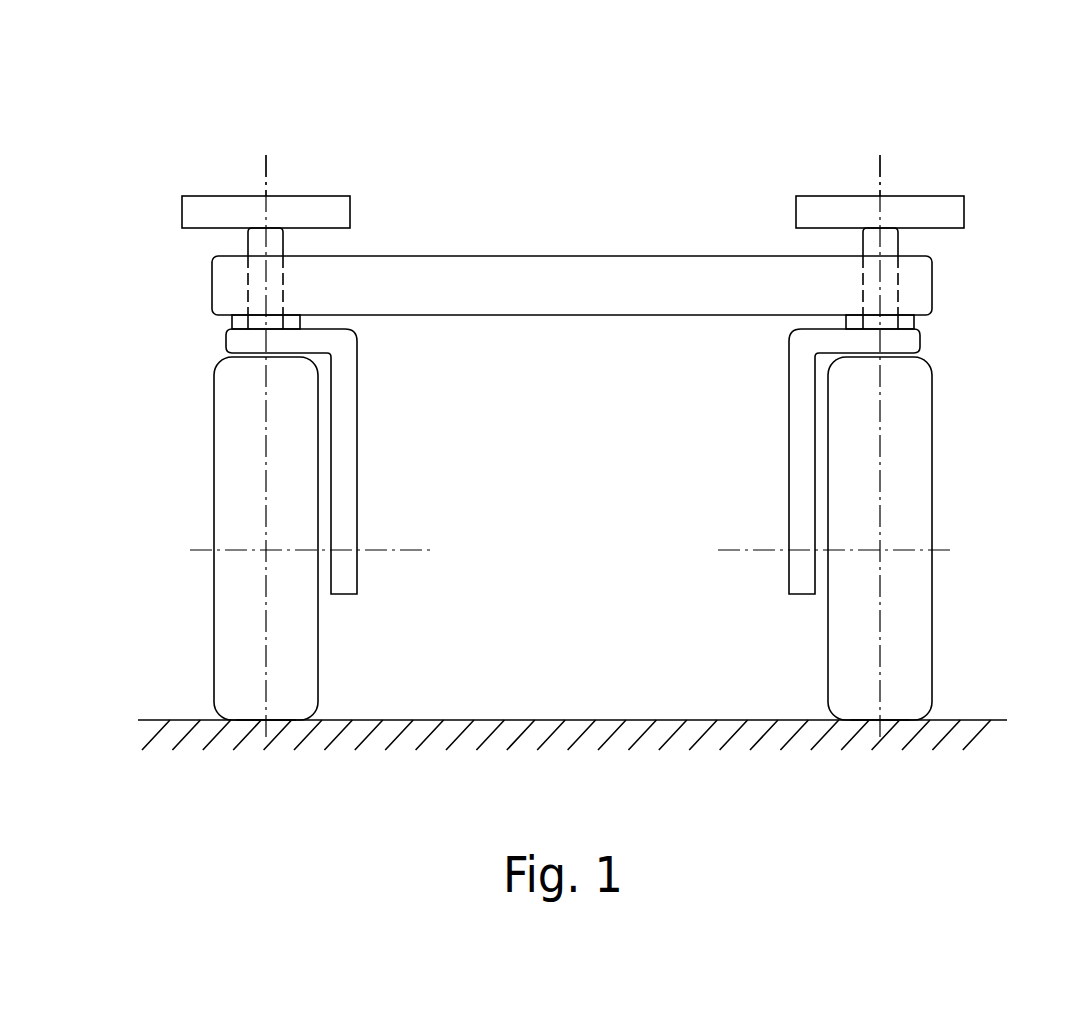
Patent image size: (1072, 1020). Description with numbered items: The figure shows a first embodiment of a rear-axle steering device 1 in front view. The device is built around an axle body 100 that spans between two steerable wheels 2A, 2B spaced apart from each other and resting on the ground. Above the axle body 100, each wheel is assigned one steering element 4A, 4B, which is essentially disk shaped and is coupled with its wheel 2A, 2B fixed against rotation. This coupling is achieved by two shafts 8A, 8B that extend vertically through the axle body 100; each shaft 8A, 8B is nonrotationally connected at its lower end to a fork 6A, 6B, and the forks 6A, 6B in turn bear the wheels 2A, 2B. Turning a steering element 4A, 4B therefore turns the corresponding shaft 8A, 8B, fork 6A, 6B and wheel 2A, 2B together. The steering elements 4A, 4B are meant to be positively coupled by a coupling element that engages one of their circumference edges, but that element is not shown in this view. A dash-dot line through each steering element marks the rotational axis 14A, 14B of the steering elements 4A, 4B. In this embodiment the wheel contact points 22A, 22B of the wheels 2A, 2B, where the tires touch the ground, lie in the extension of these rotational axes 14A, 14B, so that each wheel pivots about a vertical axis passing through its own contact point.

The vehicle axle / wheel assembly 1 is at (723, 118).
The axle body 100 is at (573, 285).
The wheel 2A is at (280, 635).
The wheel 2B is at (867, 632).
The steering element 4A is at (328, 210).
The steering element 4B is at (815, 210).
The fork 6A is at (342, 451).
The fork 6B is at (803, 450).
The shaft 8A is at (275, 245).
The shaft 8B is at (870, 242).
The rotation axis of the steering element 14A is at (266, 196).
The rotation axis of the steering element 14B is at (880, 196).
The wheel contact point 22A is at (266, 720).
The wheel contact point 22B is at (880, 720).